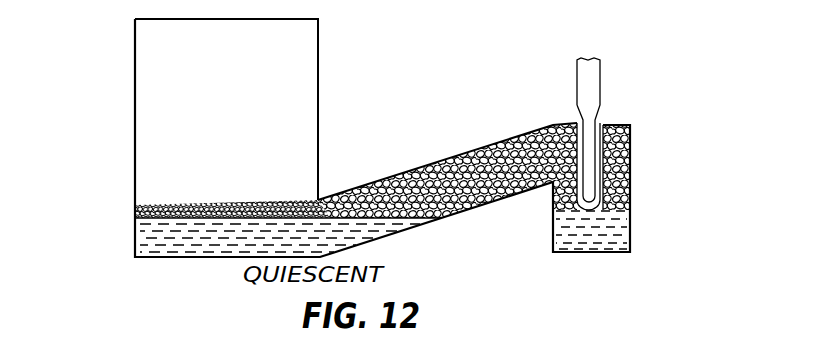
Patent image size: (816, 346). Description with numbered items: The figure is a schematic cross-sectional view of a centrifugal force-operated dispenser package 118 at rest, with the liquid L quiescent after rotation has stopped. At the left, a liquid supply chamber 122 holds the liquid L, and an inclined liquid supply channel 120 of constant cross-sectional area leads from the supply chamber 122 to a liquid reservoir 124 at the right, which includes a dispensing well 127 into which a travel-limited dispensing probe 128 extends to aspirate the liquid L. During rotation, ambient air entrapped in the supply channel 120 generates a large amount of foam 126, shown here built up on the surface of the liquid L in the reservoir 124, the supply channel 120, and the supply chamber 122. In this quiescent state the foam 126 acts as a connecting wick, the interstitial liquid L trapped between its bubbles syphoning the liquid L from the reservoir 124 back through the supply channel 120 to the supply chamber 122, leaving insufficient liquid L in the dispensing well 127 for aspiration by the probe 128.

The dispenser package 118 is at (130, 101).
The liquid supply chamber 122 is at (160, 148).
The liquid supply channel 120 is at (404, 170).
The foam 126 is at (258, 203).
The dispensing well 127 is at (604, 147).
The dispensing probe 128 is at (592, 121).
The liquid reservoir 124 is at (622, 236).
The liquid L is at (160, 237).